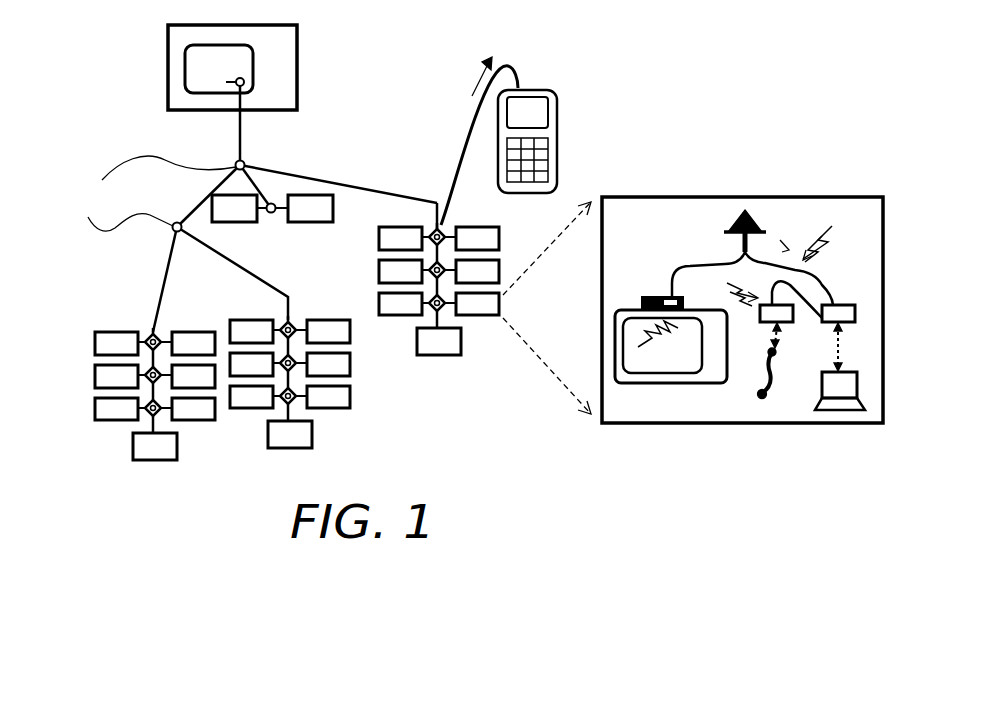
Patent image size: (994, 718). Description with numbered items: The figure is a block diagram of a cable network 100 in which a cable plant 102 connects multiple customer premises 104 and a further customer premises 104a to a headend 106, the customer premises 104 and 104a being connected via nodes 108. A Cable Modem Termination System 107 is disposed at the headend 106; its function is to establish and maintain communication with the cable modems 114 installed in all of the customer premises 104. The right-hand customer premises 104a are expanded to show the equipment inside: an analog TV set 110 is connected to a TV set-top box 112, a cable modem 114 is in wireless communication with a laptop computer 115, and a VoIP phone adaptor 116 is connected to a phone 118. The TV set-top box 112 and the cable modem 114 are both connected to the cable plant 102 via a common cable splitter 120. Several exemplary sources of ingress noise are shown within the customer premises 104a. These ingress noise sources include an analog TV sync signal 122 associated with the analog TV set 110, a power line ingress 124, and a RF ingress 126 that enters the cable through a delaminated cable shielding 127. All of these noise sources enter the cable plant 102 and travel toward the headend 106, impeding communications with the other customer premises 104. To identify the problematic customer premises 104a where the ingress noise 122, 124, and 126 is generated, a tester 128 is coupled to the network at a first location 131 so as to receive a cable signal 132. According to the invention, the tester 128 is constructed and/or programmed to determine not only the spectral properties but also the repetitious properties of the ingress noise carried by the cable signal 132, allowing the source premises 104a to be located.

The cable network 100 is at (101, 94).
The cable plant 102 is at (336, 157).
The customer premises 104 is at (90, 322).
The customer premises 104a is at (628, 432).
The headend 106 is at (298, 28).
The Cable Modem Termination System 107 is at (185, 70).
The nodes 108 is at (152, 193).
The analog TV set 110 is at (662, 384).
The TV set-top box 112 is at (648, 296).
The cable modem 114 is at (857, 305).
The laptop computer 115 is at (838, 405).
The VoIP phone adaptor 116 is at (805, 372).
The phone 118 is at (758, 396).
The common cable splitter 120 is at (727, 231).
The analog TV sync signal 122 is at (621, 325).
The power line ingress 124 is at (742, 302).
The RF ingress 126 is at (858, 225).
The delaminated cable shielding 127 is at (786, 246).
The tester 128 is at (558, 100).
The first location 131 is at (443, 208).
The cable signal 132 is at (476, 72).